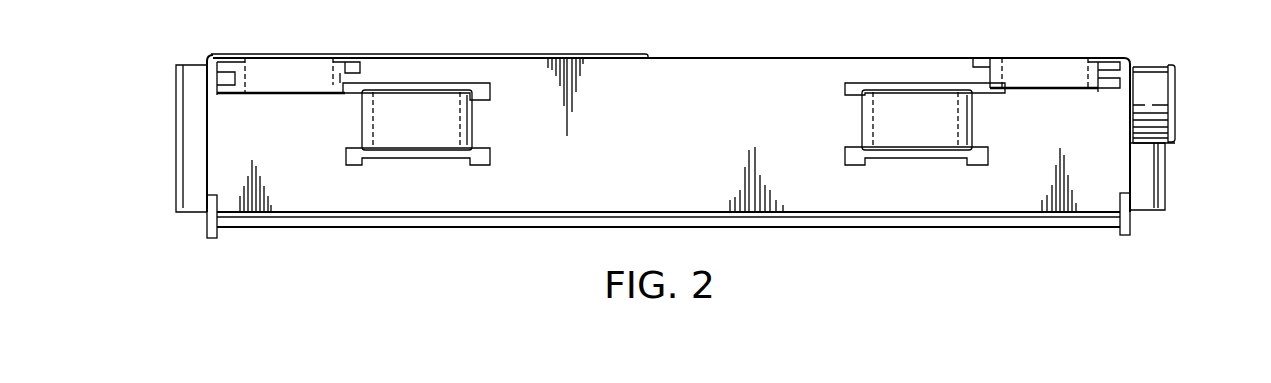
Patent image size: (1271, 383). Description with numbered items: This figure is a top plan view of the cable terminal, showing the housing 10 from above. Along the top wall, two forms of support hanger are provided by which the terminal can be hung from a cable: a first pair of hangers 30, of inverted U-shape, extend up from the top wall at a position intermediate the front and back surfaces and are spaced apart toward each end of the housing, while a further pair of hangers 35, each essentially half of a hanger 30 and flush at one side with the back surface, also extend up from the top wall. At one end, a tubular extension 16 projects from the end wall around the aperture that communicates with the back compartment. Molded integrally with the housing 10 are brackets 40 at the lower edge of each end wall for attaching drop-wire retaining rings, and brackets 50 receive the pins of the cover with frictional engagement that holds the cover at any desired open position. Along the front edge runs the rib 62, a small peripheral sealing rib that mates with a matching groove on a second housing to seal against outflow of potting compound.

The housing 10 is at (199, 47).
The tubular extension 16 is at (1176, 73).
The hangers 30 is at (488, 120).
The hangers 35 is at (310, 68).
The brackets 40 is at (189, 135).
The brackets 50 is at (212, 229).
The rib 62 is at (456, 54).